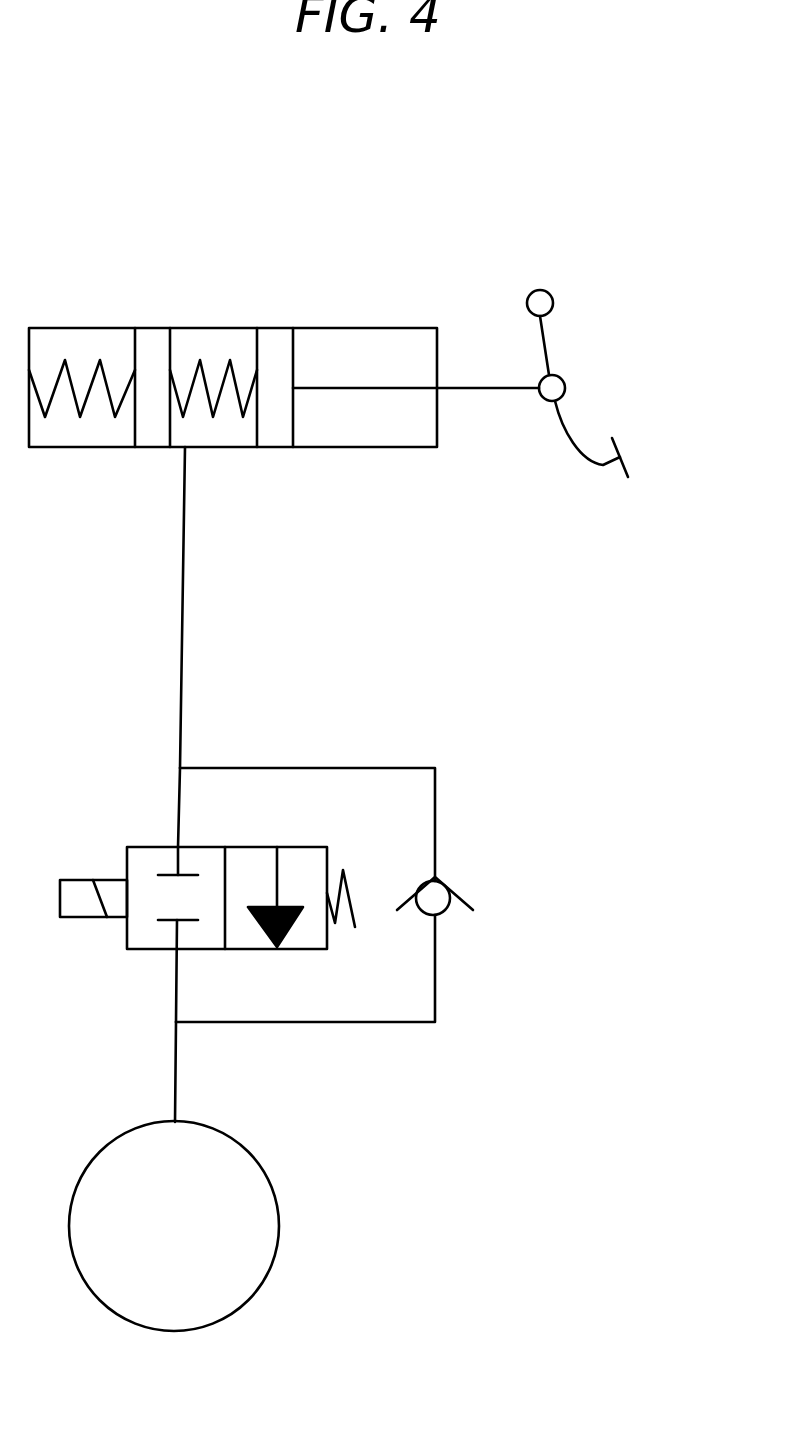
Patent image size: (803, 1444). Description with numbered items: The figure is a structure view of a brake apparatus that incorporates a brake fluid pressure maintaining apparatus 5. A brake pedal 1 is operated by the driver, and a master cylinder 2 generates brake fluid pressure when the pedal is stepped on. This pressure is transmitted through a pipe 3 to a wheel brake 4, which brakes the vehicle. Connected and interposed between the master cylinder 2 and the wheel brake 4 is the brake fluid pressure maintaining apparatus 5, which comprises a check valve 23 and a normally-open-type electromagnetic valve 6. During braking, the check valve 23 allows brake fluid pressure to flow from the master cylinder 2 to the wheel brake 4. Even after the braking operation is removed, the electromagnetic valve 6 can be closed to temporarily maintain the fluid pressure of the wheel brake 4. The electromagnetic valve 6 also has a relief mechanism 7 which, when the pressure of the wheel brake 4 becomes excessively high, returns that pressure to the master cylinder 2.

The brake pedal 1 is at (617, 440).
The master cylinder 2 is at (367, 328).
The pipe 3 is at (183, 573).
The wheel brake 4 is at (277, 1193).
The brake fluid pressure maintaining apparatus 5 is at (355, 698).
The normally-open-type electromagnetic valve 6 is at (152, 847).
The relief mechanism 7 is at (288, 932).
The check valve 23 is at (447, 877).